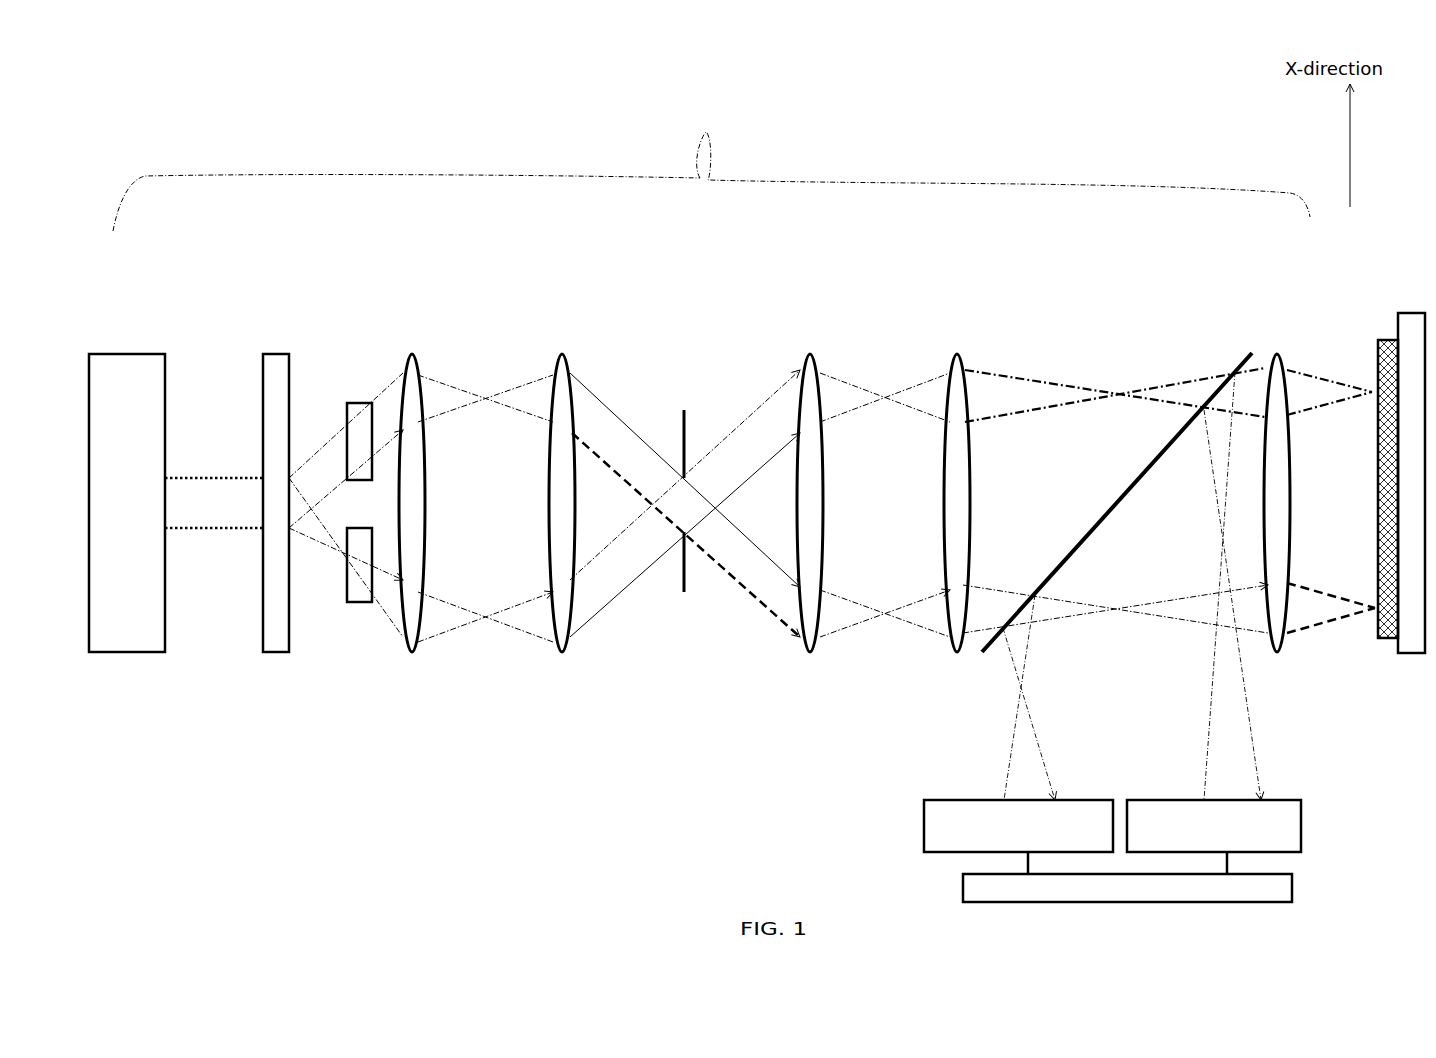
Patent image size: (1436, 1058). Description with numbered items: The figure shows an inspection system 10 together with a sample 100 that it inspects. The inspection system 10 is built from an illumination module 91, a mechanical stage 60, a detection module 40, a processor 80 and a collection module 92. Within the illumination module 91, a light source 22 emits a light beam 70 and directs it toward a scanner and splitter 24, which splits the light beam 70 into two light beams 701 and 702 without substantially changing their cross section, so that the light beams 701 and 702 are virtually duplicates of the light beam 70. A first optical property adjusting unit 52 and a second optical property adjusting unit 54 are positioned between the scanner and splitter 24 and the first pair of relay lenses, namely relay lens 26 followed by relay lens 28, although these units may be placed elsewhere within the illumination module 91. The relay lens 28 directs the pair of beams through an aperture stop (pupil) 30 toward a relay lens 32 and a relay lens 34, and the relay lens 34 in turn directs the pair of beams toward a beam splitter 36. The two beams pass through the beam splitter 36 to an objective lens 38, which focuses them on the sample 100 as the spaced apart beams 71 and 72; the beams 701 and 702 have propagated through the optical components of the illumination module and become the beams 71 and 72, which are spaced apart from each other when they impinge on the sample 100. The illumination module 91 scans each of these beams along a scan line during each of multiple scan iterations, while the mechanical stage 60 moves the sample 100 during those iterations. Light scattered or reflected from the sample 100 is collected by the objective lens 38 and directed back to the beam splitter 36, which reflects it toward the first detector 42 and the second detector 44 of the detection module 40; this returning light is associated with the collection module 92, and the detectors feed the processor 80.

The inspection system 10 is at (267, 848).
The light source 22 is at (130, 354).
The scanner and splitter 24 is at (282, 653).
The relay lens 26 is at (412, 354).
The relay lens 28 is at (562, 354).
The aperture stop (pupil) 30 is at (684, 410).
The relay lens 32 is at (810, 354).
The relay lens 34 is at (957, 354).
The beam splitter 36 is at (1247, 357).
The objective lens 38 is at (1278, 354).
The detection module 40 is at (905, 813).
The first detector 42 is at (1093, 837).
The second detector 44 is at (1225, 849).
The first optical property adjusting unit 52 is at (350, 403).
The second optical property adjusting unit 54 is at (357, 603).
The mechanical stage 60 is at (1410, 653).
The light beam 70 is at (232, 514).
The beam 71 is at (1370, 392).
The beam 72 is at (1377, 608).
The processor 80 is at (1127, 877).
The illumination module 91 is at (711, 157).
The collection module 92 is at (1117, 538).
The sample 100 is at (1388, 338).
The light beam 701 is at (328, 440).
The light beam 702 is at (323, 558).